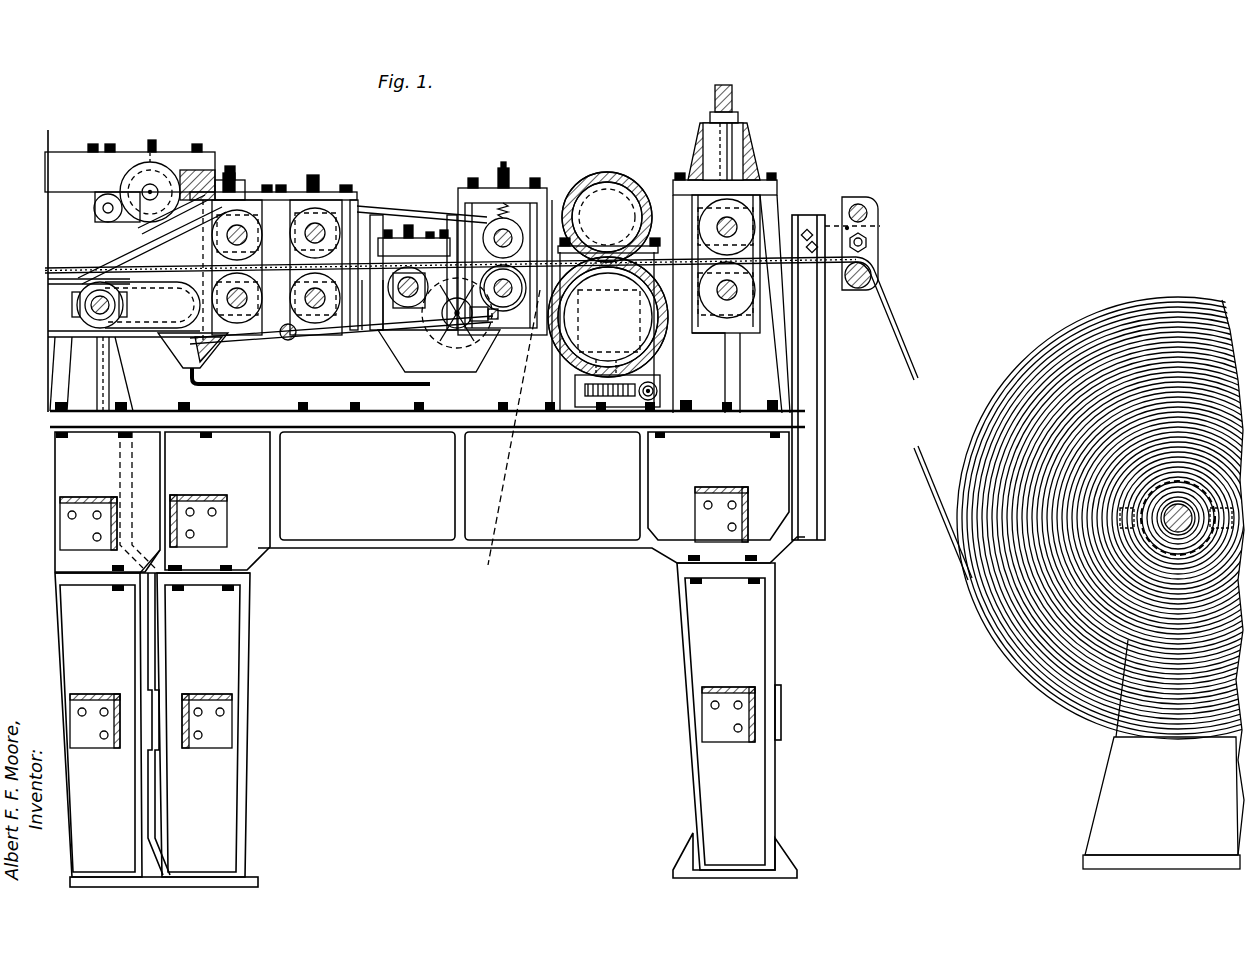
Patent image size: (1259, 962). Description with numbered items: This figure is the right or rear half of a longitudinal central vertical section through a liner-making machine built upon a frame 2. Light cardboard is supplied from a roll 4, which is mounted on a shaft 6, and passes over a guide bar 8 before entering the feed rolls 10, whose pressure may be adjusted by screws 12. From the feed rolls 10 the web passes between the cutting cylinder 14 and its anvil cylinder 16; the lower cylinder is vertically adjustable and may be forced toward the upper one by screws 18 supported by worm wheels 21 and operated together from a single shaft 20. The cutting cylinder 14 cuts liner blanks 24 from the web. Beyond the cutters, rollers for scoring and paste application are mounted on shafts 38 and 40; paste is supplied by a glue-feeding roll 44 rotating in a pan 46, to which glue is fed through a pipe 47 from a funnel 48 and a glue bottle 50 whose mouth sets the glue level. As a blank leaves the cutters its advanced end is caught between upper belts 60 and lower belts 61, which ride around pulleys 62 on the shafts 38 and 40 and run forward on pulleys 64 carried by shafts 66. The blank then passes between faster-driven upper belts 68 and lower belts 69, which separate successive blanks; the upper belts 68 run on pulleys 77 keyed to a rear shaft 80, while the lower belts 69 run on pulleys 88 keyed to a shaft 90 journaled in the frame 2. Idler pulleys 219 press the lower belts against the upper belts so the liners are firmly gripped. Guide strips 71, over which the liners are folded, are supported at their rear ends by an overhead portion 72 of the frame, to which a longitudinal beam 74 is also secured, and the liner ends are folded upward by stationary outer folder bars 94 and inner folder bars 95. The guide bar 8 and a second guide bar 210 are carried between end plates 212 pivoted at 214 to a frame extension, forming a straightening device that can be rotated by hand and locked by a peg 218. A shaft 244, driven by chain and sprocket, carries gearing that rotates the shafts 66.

The frame 2 is at (398, 522).
The roll 4 is at (1136, 312).
The shaft 6 is at (1178, 505).
The guide bar 8 is at (880, 268).
The feed rolls 10 is at (748, 213).
The screws 12 is at (738, 100).
The cutting cylinder 14 is at (622, 185).
The anvil cylinder 16 is at (660, 258).
The screws 18 is at (590, 408).
The shaft 20 is at (645, 398).
The worm wheels 21 is at (610, 405).
The liner blank 24 is at (383, 262).
The shaft 38 is at (540, 290).
The shaft 40 is at (506, 310).
The glue-feeding roll 44 is at (484, 355).
The pan 46 is at (458, 350).
The pipe 47 is at (338, 322).
The funnel 48 is at (210, 345).
The glue bottle 50 is at (230, 200).
The upper belts 60 is at (427, 218).
The lower belts 61 is at (384, 330).
The pulleys 62 is at (505, 236).
The pulleys 64 is at (354, 210).
The shafts 66 is at (312, 228).
The upper belts 68 is at (200, 270).
The lower belts 69 is at (200, 285).
The guide strips 71 is at (98, 257).
The overhead portion 72 is at (222, 175).
The longitudinal beam 74 is at (68, 158).
The pulleys 77 is at (238, 230).
The rear shaft 80 is at (240, 225).
The pulleys 88 is at (238, 302).
The shaft 90 is at (315, 305).
The outer folder bars 94 is at (50, 266).
The inner folder bars 95 is at (58, 283).
The guide bar 210 is at (870, 205).
The end plates 212 is at (880, 218).
The pivots 214 is at (868, 243).
The peg 218 is at (847, 228).
The idler pulleys 219 is at (80, 312).
The shaft 244 is at (311, 387).